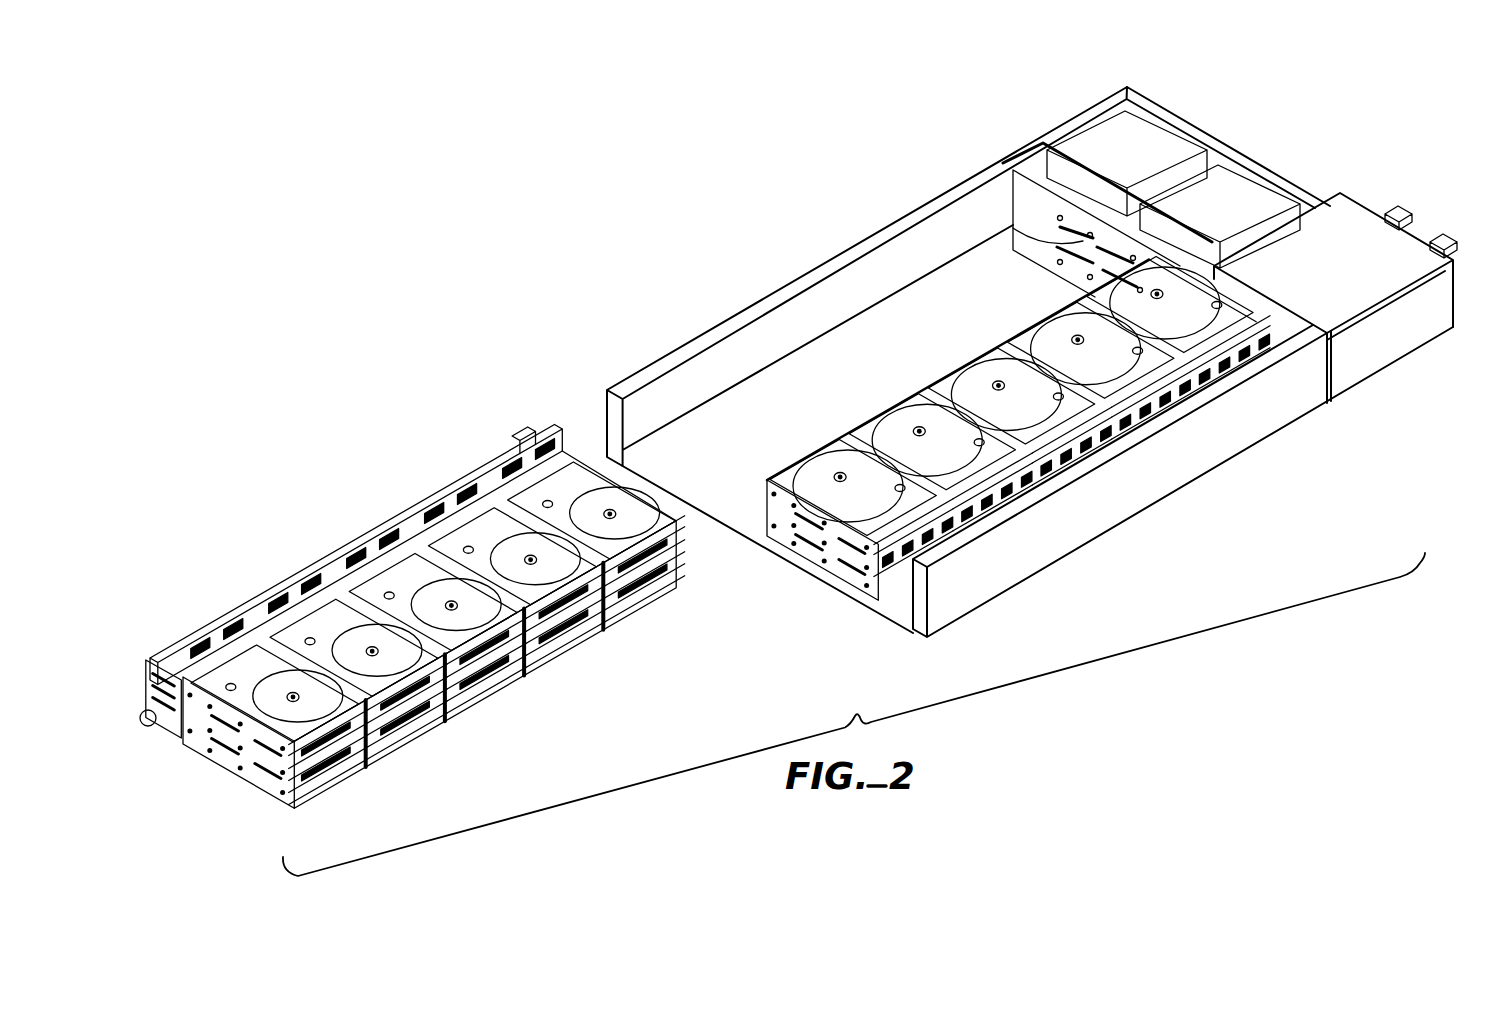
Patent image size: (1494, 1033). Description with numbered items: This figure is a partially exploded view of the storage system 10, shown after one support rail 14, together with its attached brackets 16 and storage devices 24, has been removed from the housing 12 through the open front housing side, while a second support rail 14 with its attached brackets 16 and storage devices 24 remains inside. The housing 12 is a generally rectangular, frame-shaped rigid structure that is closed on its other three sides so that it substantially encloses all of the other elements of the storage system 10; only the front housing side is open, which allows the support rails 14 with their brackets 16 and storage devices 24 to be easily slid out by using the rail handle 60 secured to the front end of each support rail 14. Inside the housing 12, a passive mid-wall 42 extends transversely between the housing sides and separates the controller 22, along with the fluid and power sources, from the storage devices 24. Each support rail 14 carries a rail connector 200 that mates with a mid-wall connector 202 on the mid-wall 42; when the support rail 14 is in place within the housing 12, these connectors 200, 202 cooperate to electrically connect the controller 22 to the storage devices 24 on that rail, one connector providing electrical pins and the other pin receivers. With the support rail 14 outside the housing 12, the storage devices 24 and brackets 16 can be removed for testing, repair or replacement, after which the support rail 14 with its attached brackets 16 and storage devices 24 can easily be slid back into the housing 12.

The storage system 10 is at (1037, 128).
The housing 12 is at (773, 289).
The support rail 14 is at (980, 510).
The bracket 16 is at (1100, 430).
The controller 22 is at (1322, 310).
The storage device 24 is at (1003, 497).
The mid-wall 42 is at (1012, 191).
The rail handle 60 is at (146, 710).
The rail connector 200 is at (527, 441).
The mid-wall connector 202 is at (1013, 205).